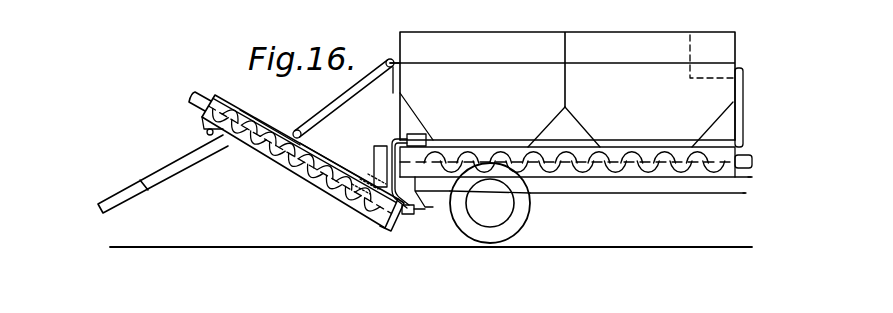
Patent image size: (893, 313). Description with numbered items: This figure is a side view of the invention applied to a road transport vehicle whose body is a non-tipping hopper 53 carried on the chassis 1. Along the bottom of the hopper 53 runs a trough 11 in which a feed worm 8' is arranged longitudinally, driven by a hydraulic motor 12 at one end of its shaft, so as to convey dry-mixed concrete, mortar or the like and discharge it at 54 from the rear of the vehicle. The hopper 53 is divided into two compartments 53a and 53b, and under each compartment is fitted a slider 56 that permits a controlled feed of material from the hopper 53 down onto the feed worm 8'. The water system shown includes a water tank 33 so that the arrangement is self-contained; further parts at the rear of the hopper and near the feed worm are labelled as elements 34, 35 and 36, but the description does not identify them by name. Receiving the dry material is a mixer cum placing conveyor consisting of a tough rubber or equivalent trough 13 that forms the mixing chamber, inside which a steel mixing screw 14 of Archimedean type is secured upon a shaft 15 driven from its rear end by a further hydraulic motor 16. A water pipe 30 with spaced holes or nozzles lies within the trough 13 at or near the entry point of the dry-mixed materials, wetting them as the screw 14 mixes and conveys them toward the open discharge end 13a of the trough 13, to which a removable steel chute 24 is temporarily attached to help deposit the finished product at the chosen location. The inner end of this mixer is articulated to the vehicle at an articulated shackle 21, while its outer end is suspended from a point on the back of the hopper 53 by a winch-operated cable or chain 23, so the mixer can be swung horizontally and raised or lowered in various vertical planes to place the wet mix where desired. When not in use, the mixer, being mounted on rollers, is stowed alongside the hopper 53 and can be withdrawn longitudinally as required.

The chassis 1 is at (593, 190).
The trough 11 is at (673, 178).
The hydraulic motor 12 is at (747, 152).
The trough 13 is at (273, 167).
The discharge end 13a is at (204, 133).
The mixing screw 14 is at (252, 121).
The shaft 15 is at (273, 124).
The hydraulic motor 16 is at (198, 94).
The articulated shackle 21 is at (420, 212).
The winch-operated cable or chain 23 is at (352, 90).
The removable steel chute 24 is at (167, 177).
The water pipe 30 is at (360, 213).
The water tank 33 is at (707, 50).
The rear gate 34 is at (747, 77).
The baffle 35 is at (733, 92).
The control valve 36 is at (417, 134).
The non-tipping hopper 53 is at (457, 43).
The compartment 53a is at (545, 114).
The compartment 53b is at (593, 116).
The discharge point 54 is at (377, 145).
The slider 56 is at (500, 147).
The feed worm 8' is at (576, 141).